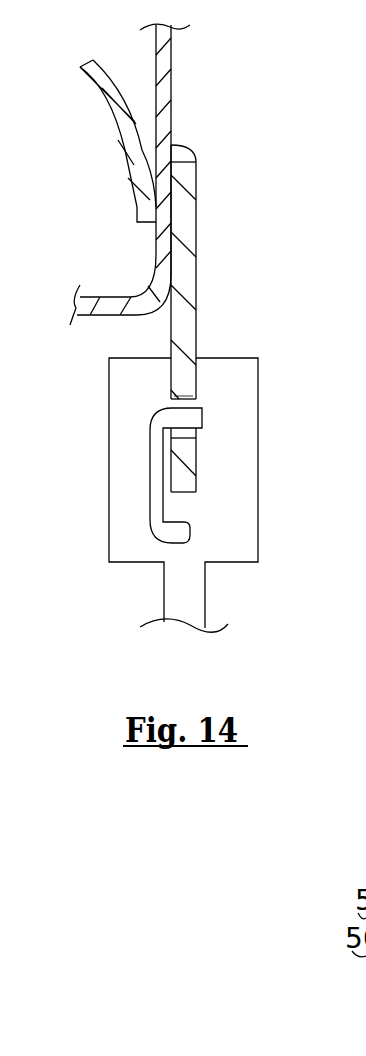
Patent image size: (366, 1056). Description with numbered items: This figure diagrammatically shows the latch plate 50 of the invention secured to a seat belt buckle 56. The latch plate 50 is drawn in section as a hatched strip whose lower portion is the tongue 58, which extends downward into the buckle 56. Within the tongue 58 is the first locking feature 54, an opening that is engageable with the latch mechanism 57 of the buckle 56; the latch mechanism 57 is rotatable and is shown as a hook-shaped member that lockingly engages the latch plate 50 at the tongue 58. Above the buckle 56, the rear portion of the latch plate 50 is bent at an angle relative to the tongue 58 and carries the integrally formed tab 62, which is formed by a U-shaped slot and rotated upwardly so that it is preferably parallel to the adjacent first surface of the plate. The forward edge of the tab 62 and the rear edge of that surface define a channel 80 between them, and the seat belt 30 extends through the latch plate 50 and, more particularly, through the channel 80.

The seat belt 30 is at (170, 92).
The latch plate 50 is at (190, 277).
The first locking feature 54 is at (181, 393).
The buckle 56 is at (247, 541).
The latch mechanism 57 is at (150, 493).
The tongue 58 is at (188, 483).
The tab 62 is at (143, 216).
The channel 80 is at (155, 132).